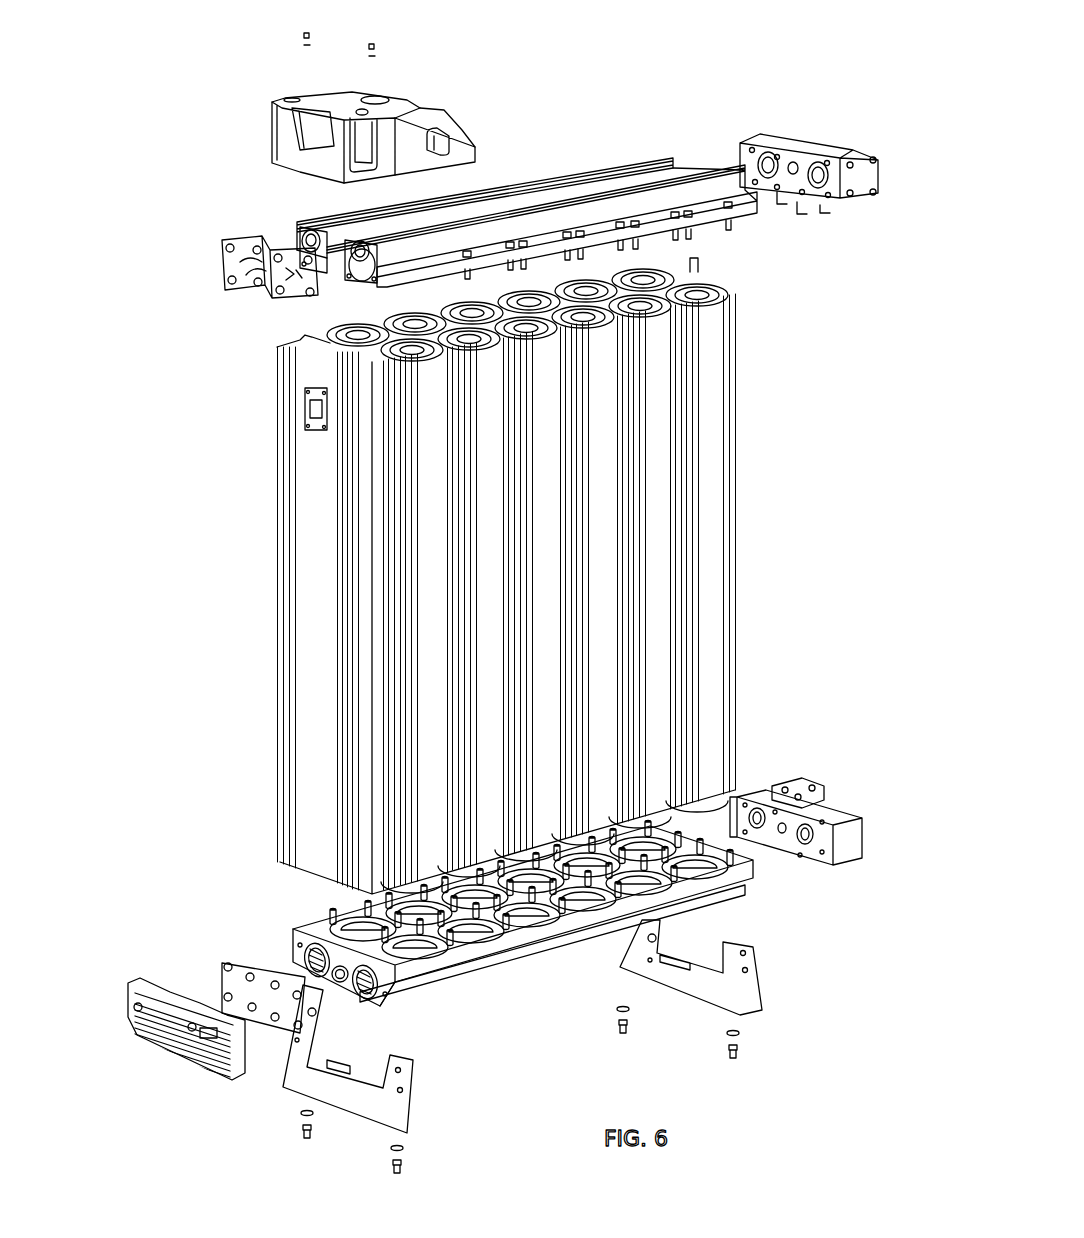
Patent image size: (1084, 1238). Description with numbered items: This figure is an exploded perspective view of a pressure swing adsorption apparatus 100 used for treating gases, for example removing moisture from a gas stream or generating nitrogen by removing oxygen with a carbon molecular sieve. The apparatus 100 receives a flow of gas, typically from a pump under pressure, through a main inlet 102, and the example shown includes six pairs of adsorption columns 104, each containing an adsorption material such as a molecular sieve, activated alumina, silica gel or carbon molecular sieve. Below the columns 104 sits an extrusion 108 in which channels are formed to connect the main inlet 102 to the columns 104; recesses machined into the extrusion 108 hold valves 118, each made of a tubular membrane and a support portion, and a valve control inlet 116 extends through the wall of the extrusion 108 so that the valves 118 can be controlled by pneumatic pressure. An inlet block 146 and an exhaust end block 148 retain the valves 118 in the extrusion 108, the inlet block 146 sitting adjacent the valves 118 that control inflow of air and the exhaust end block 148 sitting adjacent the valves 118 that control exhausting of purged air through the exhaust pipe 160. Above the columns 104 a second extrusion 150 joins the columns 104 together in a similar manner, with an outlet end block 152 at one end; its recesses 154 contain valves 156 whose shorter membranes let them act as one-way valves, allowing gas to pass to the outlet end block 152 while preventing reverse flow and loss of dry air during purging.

The pressure swing adsorption apparatus 100 is at (502, 603).
The main inlet 102 is at (775, 884).
The adsorption columns 104 is at (710, 490).
The extrusion 108 is at (540, 936).
The valve control inlet 116 is at (392, 960).
The valve 118 is at (308, 951).
The inlet block 146 is at (834, 817).
The exhaust end block 148 is at (226, 985).
The second extrusion 150 is at (590, 167).
The outlet end block 152 is at (790, 150).
The recesses 154 is at (708, 138).
The valves 156 is at (692, 130).
The exhaust pipe 160 is at (343, 985).